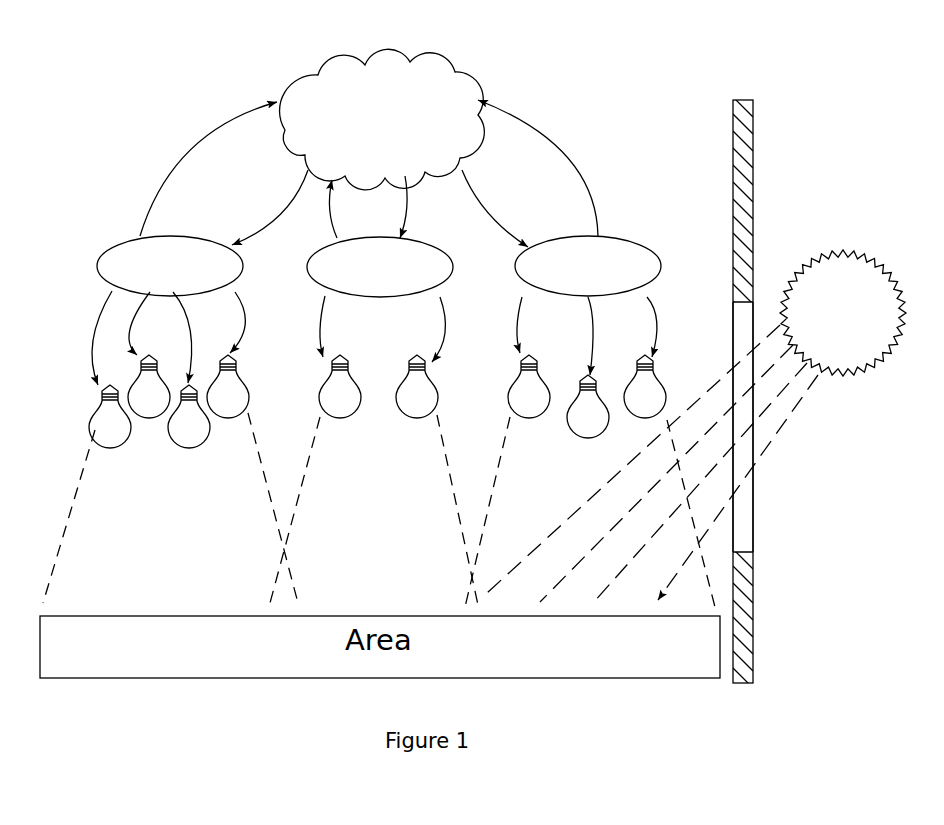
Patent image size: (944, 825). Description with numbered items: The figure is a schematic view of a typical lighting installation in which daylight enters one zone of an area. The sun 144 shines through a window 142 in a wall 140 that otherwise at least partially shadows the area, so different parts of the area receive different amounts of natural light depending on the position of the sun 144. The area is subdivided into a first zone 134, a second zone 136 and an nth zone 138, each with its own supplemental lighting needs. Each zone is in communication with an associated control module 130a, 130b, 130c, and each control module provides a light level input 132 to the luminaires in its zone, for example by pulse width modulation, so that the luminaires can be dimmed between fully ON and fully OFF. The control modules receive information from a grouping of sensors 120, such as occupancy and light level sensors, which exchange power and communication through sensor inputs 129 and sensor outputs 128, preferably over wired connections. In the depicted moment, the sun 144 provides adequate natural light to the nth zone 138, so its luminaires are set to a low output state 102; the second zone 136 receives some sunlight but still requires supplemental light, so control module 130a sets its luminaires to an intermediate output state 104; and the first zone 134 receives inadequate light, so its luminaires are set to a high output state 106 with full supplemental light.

The grouping of sensors 120 is at (437, 85).
The sensor outputs 128 is at (262, 220).
The sensor inputs 129 is at (212, 137).
The control module 130a is at (422, 262).
The control module 130b is at (648, 265).
The control module 130c is at (228, 266).
The light level input 132 is at (93, 323).
The low output state 102 is at (532, 413).
The intermediate output state 104 is at (340, 413).
The high output state 106 is at (113, 442).
The first zone 134 is at (275, 507).
The second zone 136 is at (455, 502).
The nth zone 138 is at (687, 497).
The wall 140 is at (745, 185).
The window 142 is at (745, 507).
The sun 144 is at (853, 290).